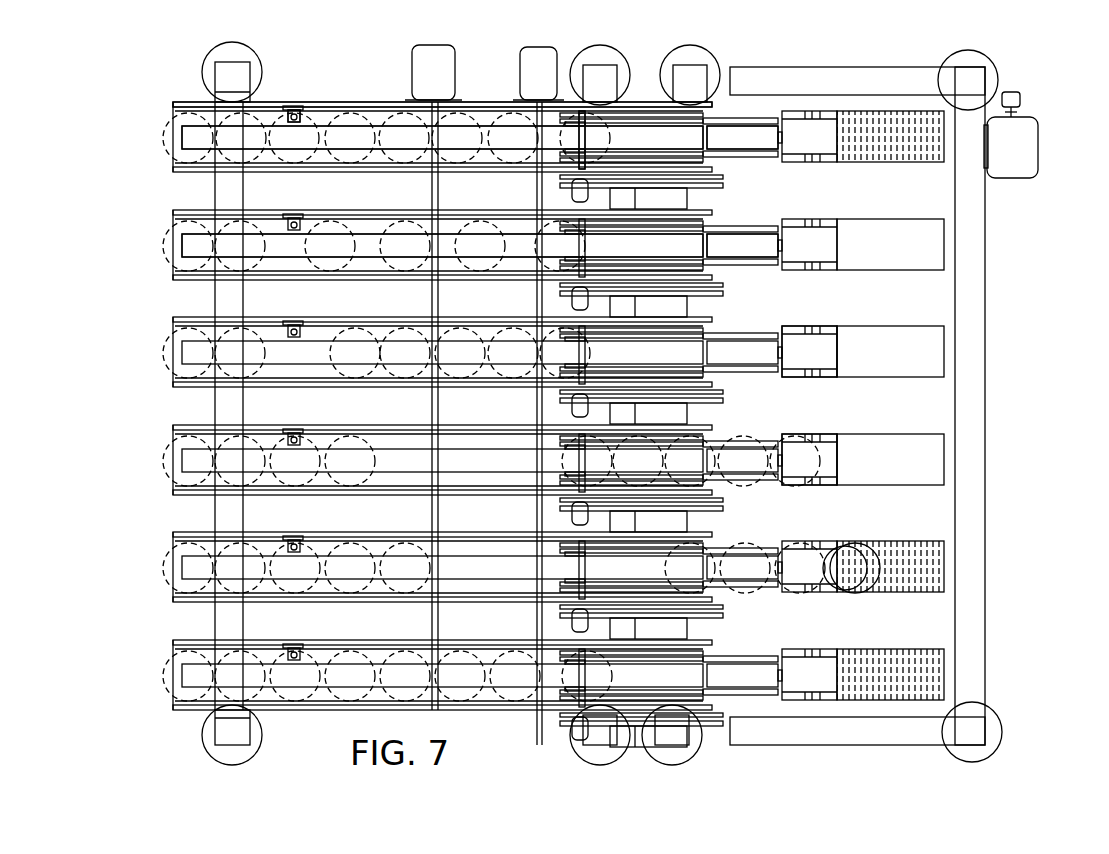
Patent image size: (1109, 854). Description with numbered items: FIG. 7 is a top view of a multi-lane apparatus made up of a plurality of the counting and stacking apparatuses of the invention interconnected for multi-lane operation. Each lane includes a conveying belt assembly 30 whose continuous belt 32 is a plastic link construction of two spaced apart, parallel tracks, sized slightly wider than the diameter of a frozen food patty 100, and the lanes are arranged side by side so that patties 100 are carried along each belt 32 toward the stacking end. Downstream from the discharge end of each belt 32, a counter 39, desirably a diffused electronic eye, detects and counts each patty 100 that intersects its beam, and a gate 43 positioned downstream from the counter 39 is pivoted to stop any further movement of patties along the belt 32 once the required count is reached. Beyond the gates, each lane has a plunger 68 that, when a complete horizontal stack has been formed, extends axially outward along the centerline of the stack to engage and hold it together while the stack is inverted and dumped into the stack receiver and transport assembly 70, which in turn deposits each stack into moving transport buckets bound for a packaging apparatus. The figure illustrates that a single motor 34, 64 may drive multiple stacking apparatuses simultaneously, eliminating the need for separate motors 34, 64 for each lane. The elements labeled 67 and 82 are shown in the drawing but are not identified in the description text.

The food patties 100 is at (165, 132).
The counter 39 is at (292, 108).
The conveying belt assembly 30 is at (350, 102).
The electric motor 34 is at (440, 50).
The electric motor 64 is at (540, 62).
The belt 32 is at (380, 143).
The gate 43 is at (577, 137).
The piston rod 67 is at (753, 140).
The collection box 82 is at (860, 325).
The plunger 68 is at (780, 378).
The stack receiver and transport assembly 70 is at (1020, 298).